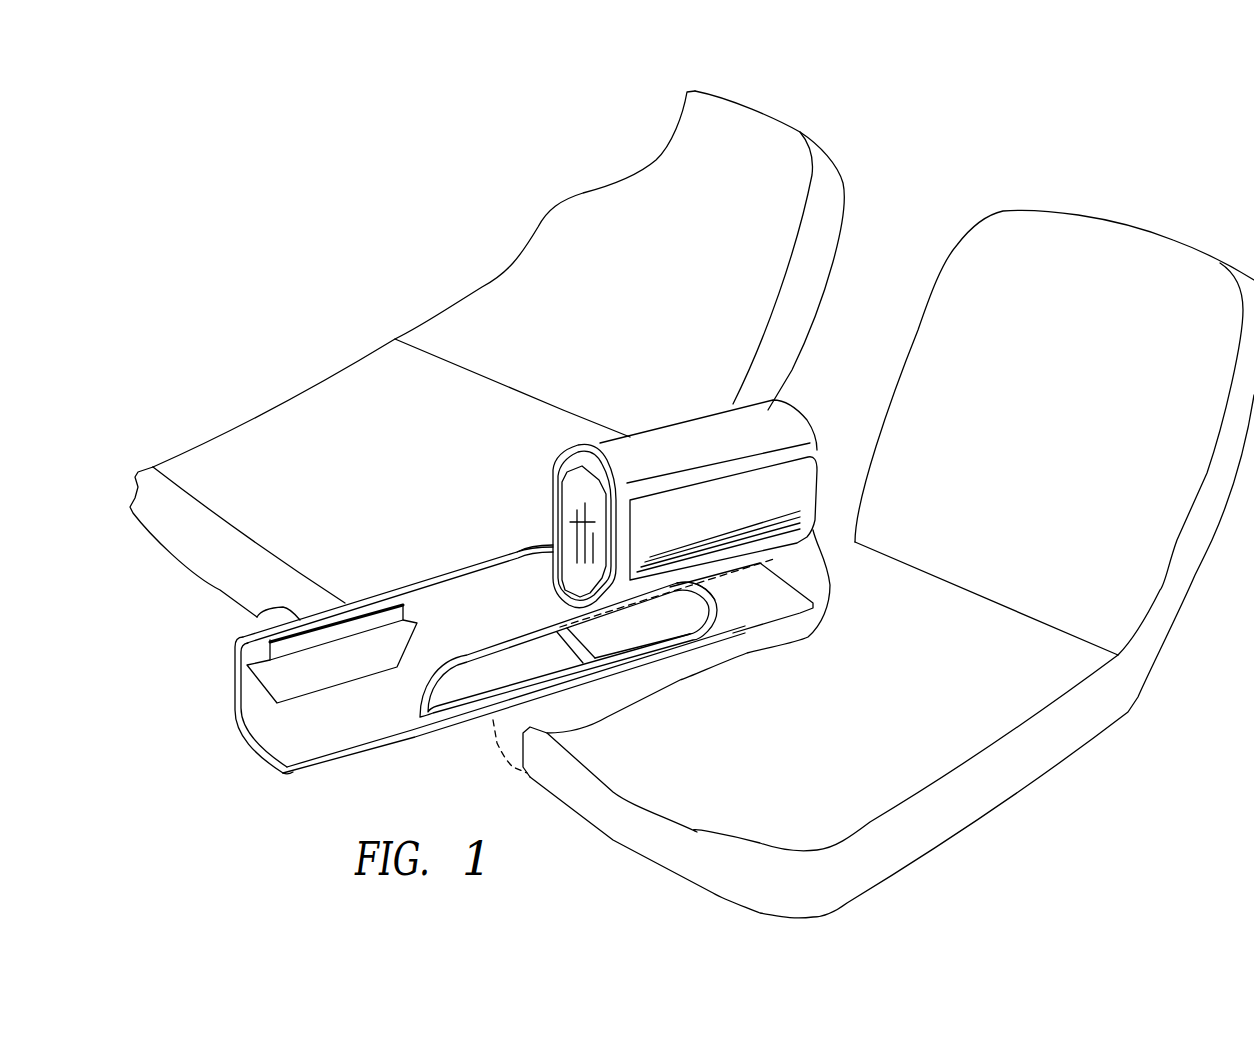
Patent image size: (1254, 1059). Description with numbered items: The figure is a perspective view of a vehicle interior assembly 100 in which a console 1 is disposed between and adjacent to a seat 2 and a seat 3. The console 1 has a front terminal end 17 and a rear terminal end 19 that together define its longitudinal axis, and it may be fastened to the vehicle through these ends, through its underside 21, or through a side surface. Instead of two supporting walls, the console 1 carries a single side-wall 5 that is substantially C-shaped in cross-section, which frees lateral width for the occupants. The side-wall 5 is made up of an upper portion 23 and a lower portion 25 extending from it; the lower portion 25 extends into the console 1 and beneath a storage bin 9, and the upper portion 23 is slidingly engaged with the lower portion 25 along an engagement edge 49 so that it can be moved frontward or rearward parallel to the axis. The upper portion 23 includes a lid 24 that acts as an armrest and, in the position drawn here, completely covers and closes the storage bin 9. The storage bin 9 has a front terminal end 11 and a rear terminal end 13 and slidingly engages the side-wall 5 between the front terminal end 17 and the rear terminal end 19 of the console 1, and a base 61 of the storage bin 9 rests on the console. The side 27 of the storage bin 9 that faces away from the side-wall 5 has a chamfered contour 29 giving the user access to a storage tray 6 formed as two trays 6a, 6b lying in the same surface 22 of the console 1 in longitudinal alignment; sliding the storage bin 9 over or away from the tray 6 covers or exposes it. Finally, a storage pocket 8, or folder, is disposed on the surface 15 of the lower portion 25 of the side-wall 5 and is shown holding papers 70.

The vehicle interior assembly 100 is at (880, 342).
The console 1 is at (287, 747).
The seat 2 is at (960, 805).
The seat 3 is at (185, 529).
The side-wall 5 is at (250, 683).
The storage tray 6 is at (418, 735).
The storage tray 6a is at (547, 670).
The storage tray 6b is at (617, 645).
The storage pocket 8 is at (250, 657).
The storage bin 9 is at (813, 447).
The front terminal end 11 is at (583, 522).
The rear terminal end 13 is at (793, 473).
The surface 15 is at (483, 600).
The front terminal end 17 is at (262, 725).
The rear terminal end 19 is at (783, 590).
The underside 21 is at (297, 767).
The surface 22 is at (350, 720).
The upper portion 23 is at (573, 453).
The lid 24 is at (780, 422).
The lower portion 25 is at (513, 590).
The side 27 is at (747, 493).
The chamfered contour 29 is at (721, 565).
The engagement edge 49 is at (413, 583).
The base 61 is at (670, 587).
The papers 70 is at (260, 617).